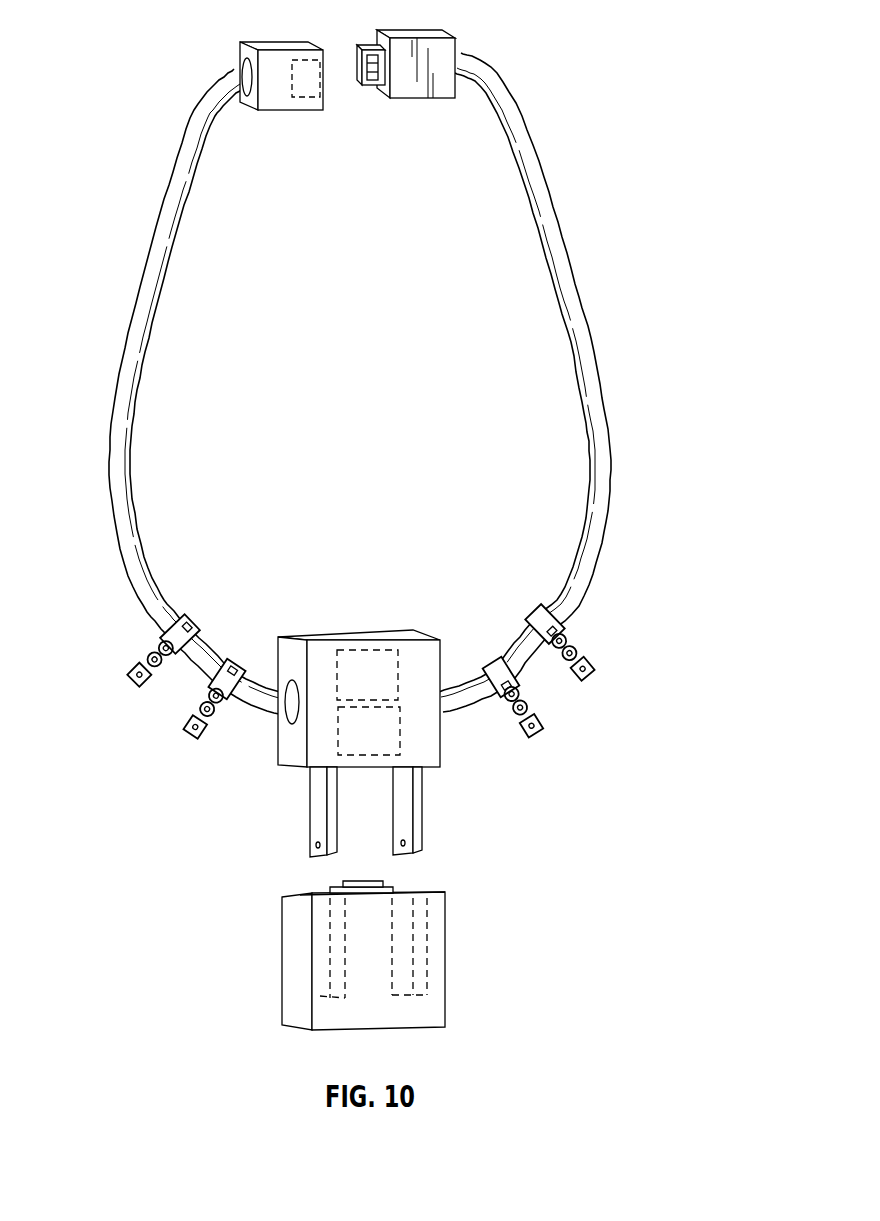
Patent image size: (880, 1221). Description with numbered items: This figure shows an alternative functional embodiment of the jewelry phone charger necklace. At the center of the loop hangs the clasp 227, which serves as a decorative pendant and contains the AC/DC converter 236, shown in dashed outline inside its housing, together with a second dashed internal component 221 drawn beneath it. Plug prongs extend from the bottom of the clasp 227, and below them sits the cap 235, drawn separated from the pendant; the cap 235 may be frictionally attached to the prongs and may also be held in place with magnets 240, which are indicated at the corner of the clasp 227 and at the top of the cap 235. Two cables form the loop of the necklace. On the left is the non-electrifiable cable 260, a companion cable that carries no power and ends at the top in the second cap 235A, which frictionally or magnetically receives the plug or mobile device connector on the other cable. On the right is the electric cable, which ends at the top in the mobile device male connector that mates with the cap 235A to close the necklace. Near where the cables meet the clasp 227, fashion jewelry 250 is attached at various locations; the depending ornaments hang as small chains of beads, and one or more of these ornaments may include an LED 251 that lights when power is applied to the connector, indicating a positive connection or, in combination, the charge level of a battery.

The non-electrifiable cable 260 is at (108, 443).
The second cap 235A is at (273, 42).
The clasp 227 is at (333, 626).
The AC/DC converter 236 is at (398, 668).
The internal component (dashed) 221 is at (400, 723).
The light emitting diode 251 is at (187, 624).
The fashion jewelry 250 is at (128, 680).
The magnet 240 is at (288, 768).
The cap 235 is at (445, 938).